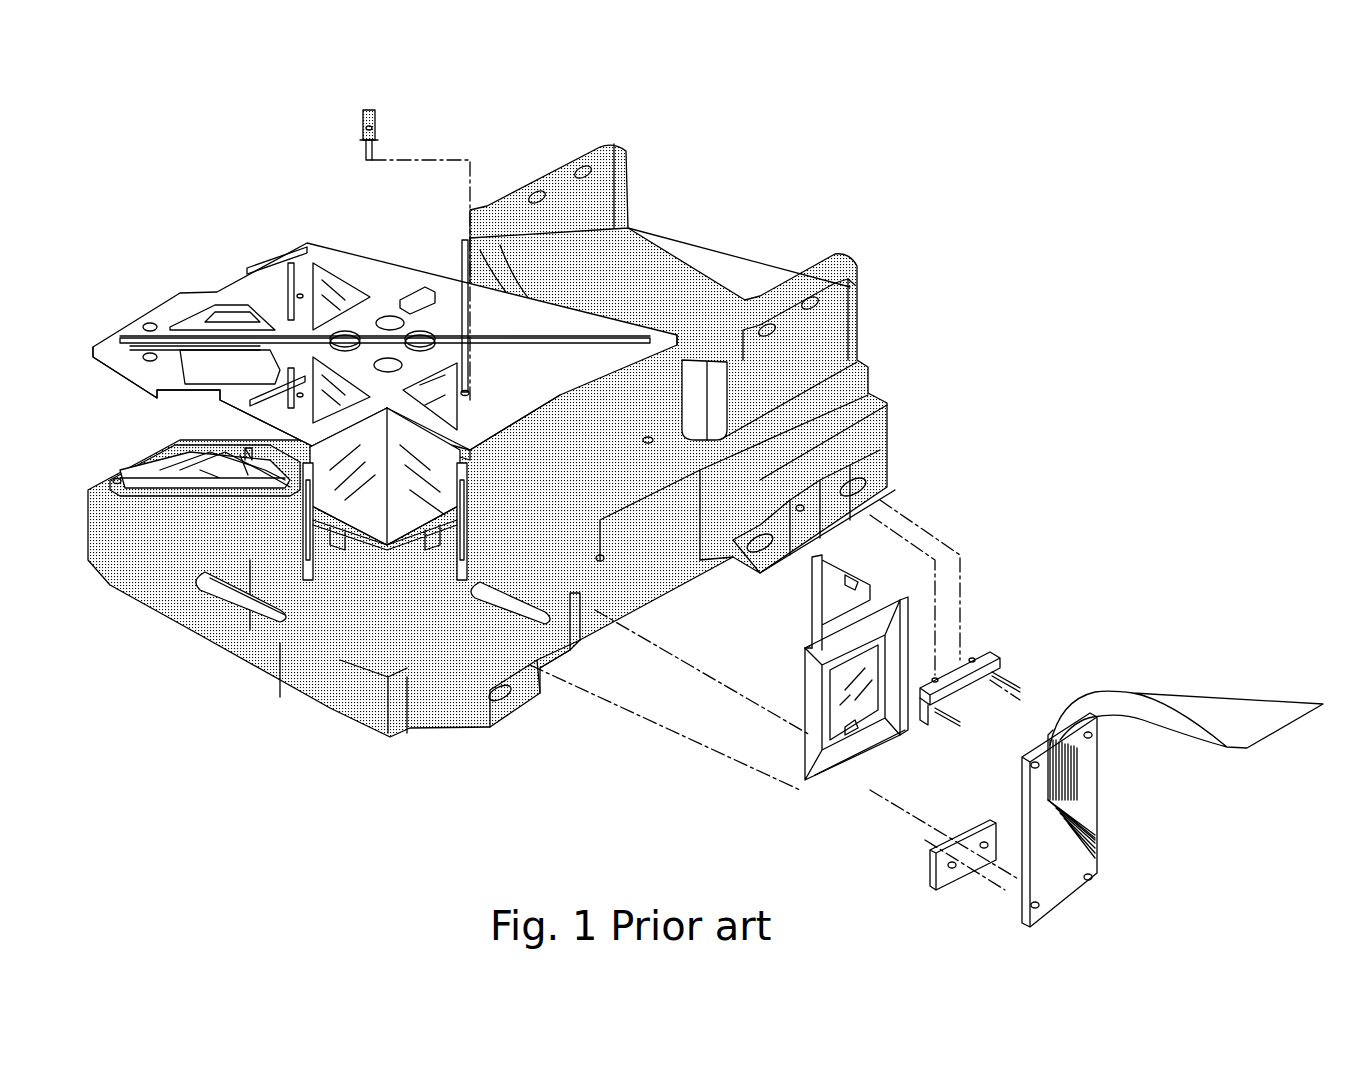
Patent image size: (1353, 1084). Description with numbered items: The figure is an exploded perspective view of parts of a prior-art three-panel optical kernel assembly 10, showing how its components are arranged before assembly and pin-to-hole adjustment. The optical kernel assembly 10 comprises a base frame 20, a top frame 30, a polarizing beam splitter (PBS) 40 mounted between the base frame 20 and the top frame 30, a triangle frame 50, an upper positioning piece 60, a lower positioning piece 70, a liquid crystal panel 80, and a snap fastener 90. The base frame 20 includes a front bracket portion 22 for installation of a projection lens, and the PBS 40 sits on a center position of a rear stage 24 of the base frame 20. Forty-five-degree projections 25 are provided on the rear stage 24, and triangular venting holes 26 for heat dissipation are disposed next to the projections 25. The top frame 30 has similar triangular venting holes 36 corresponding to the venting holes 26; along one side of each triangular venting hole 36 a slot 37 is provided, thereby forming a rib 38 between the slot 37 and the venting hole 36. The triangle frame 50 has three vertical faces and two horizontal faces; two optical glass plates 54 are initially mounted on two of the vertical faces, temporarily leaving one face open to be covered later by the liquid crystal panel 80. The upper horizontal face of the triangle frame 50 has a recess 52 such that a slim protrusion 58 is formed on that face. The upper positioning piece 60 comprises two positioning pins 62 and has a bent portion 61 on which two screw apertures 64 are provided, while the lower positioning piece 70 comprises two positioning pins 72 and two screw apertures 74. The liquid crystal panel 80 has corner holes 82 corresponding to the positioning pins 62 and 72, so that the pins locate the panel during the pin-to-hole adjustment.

The optical kernel assembly 10 is at (990, 270).
The base frame 20 is at (848, 330).
The front bracket portion 22 is at (700, 270).
The rear stage 24 is at (120, 480).
The 45-degree projections 25 is at (262, 590).
The triangular venting holes 26 is at (330, 600).
The top frame 30 is at (232, 287).
The triangular venting holes 36 is at (325, 290).
The slot 37 is at (290, 262).
The rib 38 is at (303, 270).
The polarizing beam splitter (PBS) 40 is at (262, 480).
The triangle frame 50 is at (849, 665).
The recess 52 is at (828, 590).
The optical glass plates 54 is at (882, 672).
The slim protrusion 58 is at (812, 606).
The upper positioning piece 60 is at (987, 690).
The bent portion 61 is at (922, 708).
The positioning pins 62 is at (950, 722).
The screw apertures 64 is at (937, 678).
The lower positioning piece 70 is at (924, 866).
The positioning pins 72 is at (950, 868).
The screw apertures 74 is at (986, 848).
The liquid crystal panel 80 is at (1147, 809).
The corner holes 82 is at (1032, 766).
The snap fastener 90 is at (360, 122).